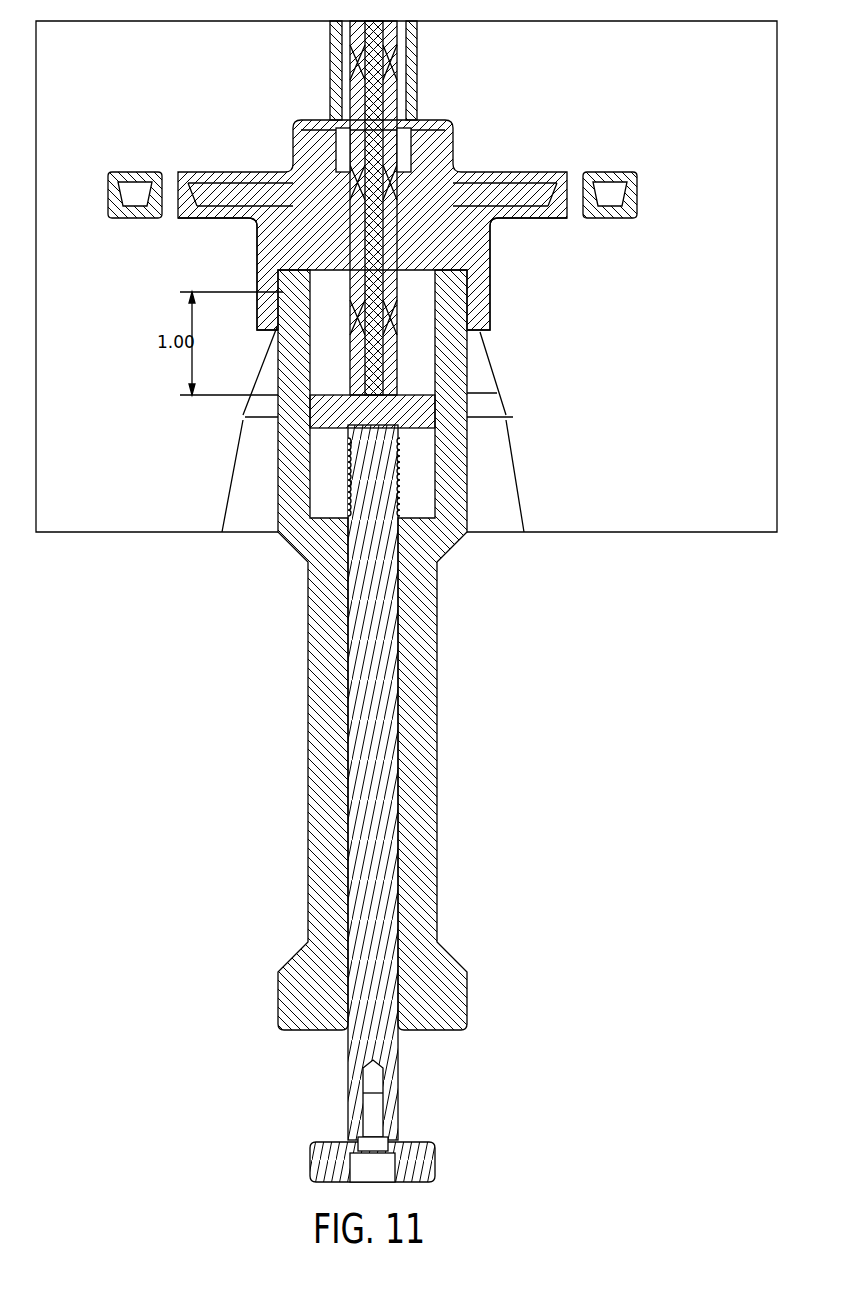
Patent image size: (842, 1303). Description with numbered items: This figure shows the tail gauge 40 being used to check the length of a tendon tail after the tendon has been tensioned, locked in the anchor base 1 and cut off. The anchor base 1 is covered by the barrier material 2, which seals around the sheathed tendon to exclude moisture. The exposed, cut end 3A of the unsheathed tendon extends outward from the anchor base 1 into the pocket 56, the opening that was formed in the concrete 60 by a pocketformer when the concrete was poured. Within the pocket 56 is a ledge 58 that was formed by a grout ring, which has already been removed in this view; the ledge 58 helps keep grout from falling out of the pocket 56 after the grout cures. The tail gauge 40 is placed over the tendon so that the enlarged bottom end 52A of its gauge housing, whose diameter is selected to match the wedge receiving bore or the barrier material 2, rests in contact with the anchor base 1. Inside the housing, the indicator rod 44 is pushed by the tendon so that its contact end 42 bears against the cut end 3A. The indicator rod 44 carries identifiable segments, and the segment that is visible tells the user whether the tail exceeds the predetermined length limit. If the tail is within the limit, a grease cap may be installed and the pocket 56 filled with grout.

The anchor base 1 is at (290, 170).
The barrier material 2 is at (248, 226).
The unsheathed portion of the tendon 3A is at (402, 338).
The tail gauge 40 is at (480, 792).
The contact end 42 is at (420, 422).
The indicator rod 44 is at (385, 898).
The bottom end of the gauge housing 52A is at (452, 318).
The pocket 56 is at (250, 505).
The ledge 58 is at (247, 412).
The concrete 60 is at (709, 522).